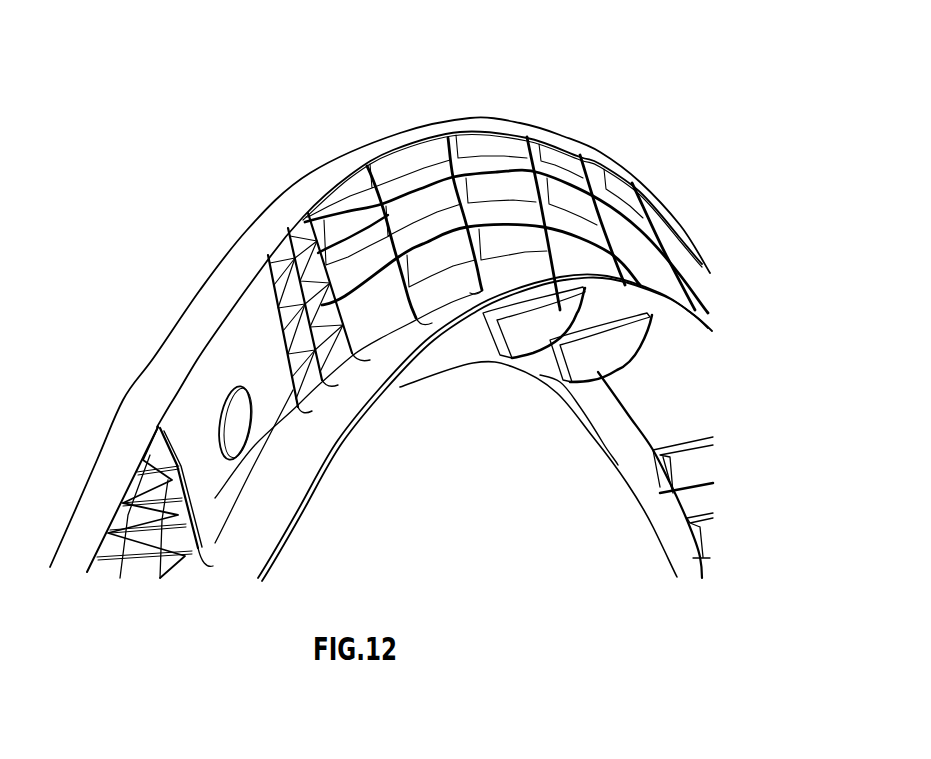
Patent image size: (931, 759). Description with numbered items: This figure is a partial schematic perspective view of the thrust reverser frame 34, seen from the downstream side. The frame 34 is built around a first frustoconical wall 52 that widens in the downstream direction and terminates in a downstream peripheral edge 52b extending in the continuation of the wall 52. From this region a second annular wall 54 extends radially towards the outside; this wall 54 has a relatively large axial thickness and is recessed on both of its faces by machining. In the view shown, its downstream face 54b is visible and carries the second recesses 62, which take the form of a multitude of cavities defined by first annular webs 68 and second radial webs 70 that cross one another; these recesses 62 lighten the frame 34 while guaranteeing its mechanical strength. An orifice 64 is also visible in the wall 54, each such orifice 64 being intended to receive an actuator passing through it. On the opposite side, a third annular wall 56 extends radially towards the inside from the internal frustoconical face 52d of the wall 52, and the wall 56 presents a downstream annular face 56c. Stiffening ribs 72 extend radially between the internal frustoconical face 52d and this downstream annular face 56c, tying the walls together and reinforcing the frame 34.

The frame 34 is at (770, 251).
The first frustoconical wall 52 is at (245, 563).
The downstream peripheral edge 52b is at (288, 528).
The internal frustoconical face 52d is at (678, 367).
The second annular wall 54 is at (421, 279).
The downstream face 54b is at (502, 200).
The third annular wall 56 is at (285, 395).
The downstream annular face 56c is at (150, 502).
The second recesses 62 is at (657, 262).
The orifice 64 is at (250, 440).
The first annular webs 68 is at (370, 243).
The second radial webs 70 is at (262, 217).
The stiffening ribs 72 is at (588, 350).